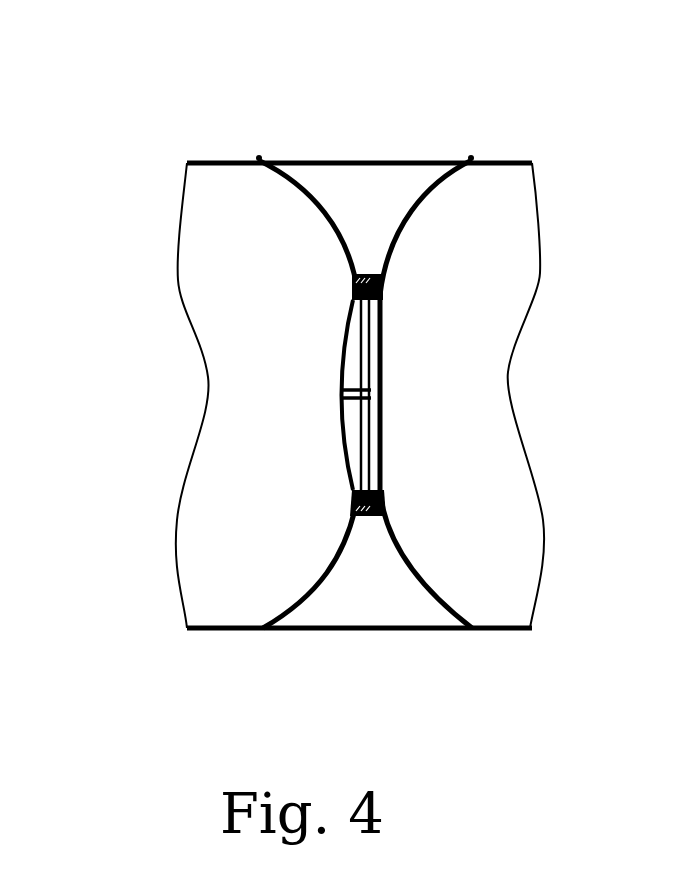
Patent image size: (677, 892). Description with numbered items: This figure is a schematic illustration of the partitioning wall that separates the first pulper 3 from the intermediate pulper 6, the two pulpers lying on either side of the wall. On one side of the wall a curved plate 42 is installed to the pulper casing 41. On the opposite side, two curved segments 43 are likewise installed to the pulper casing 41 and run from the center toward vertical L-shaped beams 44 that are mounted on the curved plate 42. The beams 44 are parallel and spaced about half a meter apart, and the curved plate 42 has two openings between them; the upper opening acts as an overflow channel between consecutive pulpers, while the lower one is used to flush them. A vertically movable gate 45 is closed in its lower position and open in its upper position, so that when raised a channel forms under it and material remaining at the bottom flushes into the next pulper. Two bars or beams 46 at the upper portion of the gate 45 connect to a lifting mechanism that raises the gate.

The first pulper 3 is at (468, 383).
The intermediate pulper 6 is at (283, 427).
The pulper casing 41 is at (512, 158).
The curved plate 42 is at (432, 182).
The curved segments 43 is at (299, 186).
The vertical L-shaped beams 44 is at (364, 273).
The gate 45 is at (340, 378).
The bars or beams 46 is at (347, 287).